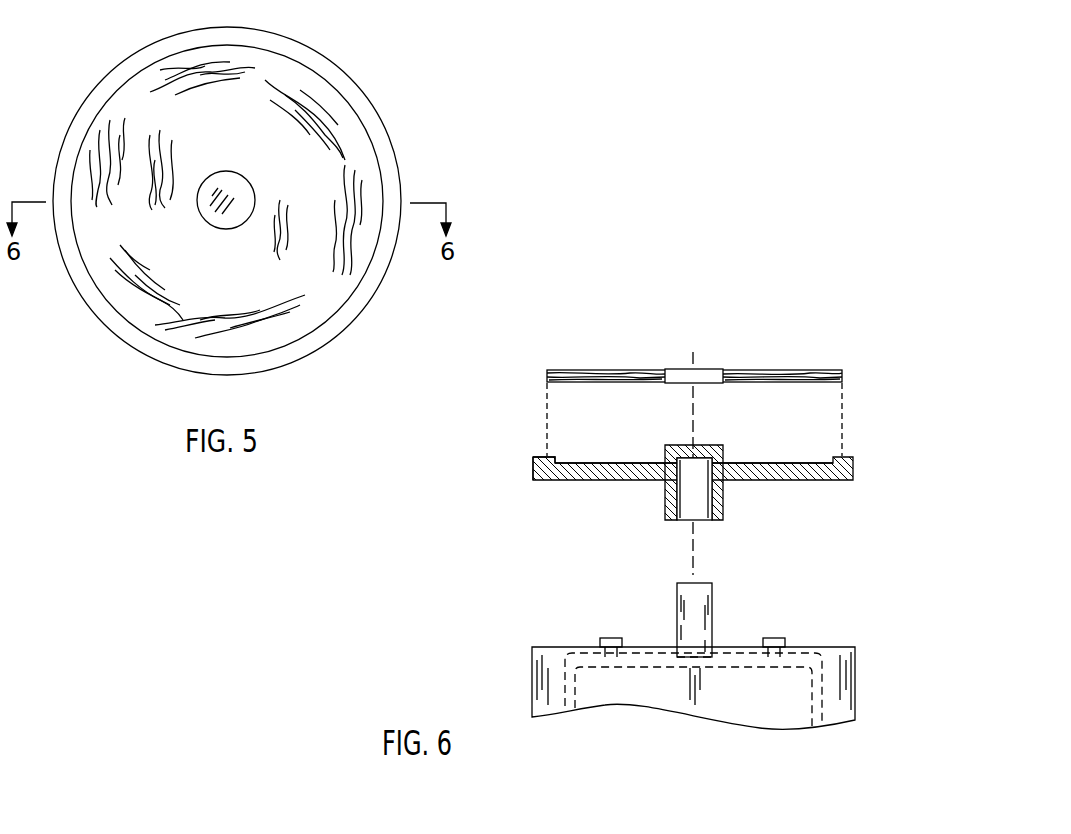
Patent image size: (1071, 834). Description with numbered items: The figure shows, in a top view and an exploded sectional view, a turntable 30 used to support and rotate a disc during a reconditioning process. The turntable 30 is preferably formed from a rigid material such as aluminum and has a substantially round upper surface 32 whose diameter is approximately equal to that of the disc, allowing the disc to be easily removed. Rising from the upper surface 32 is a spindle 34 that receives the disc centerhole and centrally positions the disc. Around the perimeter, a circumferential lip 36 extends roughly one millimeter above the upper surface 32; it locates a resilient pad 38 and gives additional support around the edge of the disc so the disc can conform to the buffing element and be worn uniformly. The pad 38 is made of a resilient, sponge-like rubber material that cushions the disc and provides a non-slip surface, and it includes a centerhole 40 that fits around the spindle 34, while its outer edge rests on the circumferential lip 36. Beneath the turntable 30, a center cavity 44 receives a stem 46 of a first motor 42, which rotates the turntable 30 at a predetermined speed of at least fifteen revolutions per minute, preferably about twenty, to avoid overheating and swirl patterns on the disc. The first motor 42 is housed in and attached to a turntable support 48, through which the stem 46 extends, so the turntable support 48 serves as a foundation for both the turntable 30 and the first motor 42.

In FIG. 5, the turntable 30 is at (231, 202).
In FIG. 6, the turntable 30 is at (672, 491).
In FIG. 6, the upper surface 32 is at (787, 463).
In FIG. 5, the spindle 34 is at (224, 171).
In FIG. 6, the spindle 34 is at (649, 487).
In FIG. 5, the circumferential lip 36 is at (132, 66).
In FIG. 6, the circumferential lip 36 is at (540, 457).
In FIG. 5, the resilient pad 38 is at (122, 313).
In FIG. 6, the resilient pad 38 is at (775, 370).
In FIG. 6, the centerhole 40 is at (684, 370).
In FIG. 6, the first motor 42 is at (665, 695).
In FIG. 6, the center cavity 44 is at (690, 526).
In FIG. 6, the stem 46 is at (713, 610).
In FIG. 6, the turntable support 48 is at (793, 645).